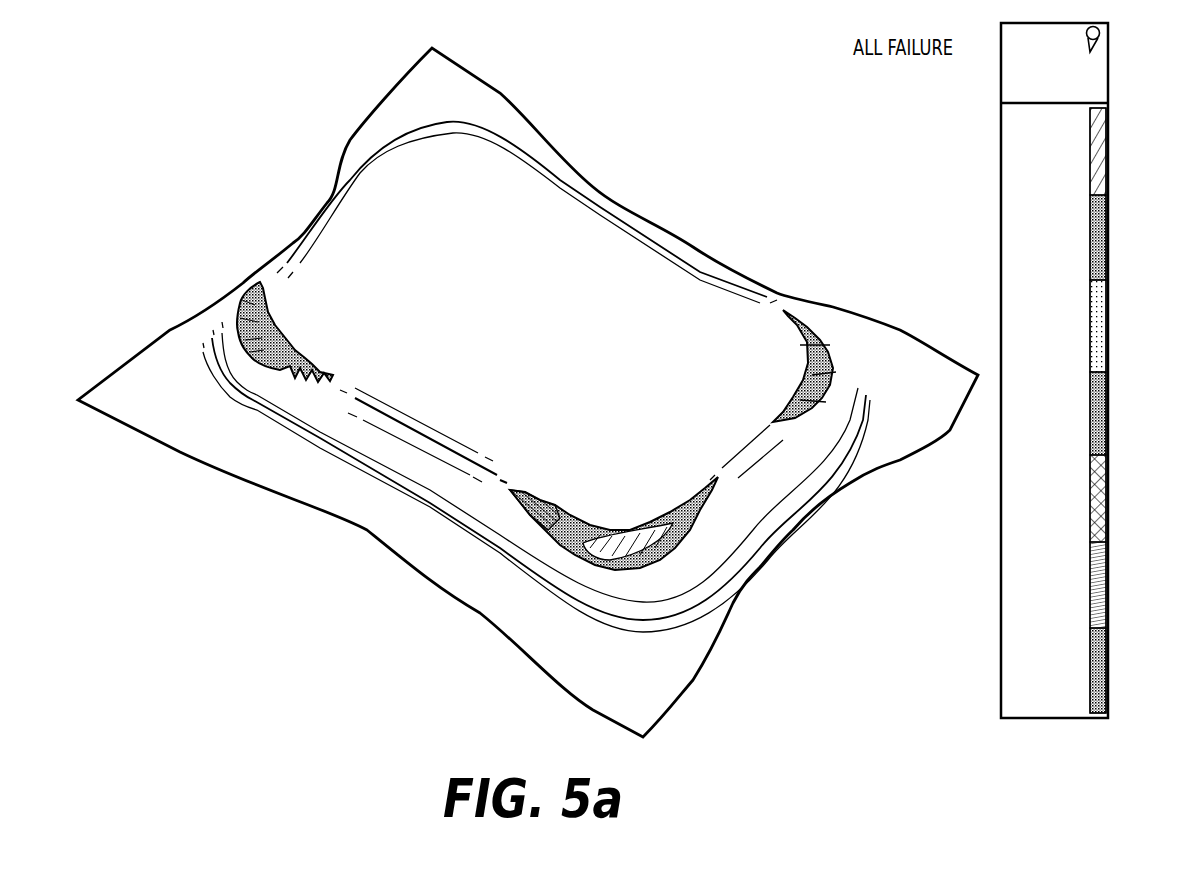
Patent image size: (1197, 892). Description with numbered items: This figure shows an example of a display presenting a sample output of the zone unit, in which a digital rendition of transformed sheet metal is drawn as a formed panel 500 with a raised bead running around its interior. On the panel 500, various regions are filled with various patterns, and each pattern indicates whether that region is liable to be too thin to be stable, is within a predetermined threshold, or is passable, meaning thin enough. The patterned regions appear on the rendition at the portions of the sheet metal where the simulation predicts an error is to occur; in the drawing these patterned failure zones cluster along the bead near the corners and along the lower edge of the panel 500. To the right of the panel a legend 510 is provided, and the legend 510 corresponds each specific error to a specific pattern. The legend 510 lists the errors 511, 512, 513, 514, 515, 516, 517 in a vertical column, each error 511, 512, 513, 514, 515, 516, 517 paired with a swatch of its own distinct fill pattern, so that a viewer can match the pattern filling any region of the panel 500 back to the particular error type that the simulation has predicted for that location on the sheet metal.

The formed panel with failure regions 500 is at (368, 537).
The legend 510 is at (1060, 720).
The error 511 is at (1108, 654).
The error 512 is at (1108, 568).
The error 513 is at (1108, 478).
The error 514 is at (1108, 391).
The error 515 is at (1108, 306).
The error 516 is at (1108, 224).
The error 517 is at (1108, 136).